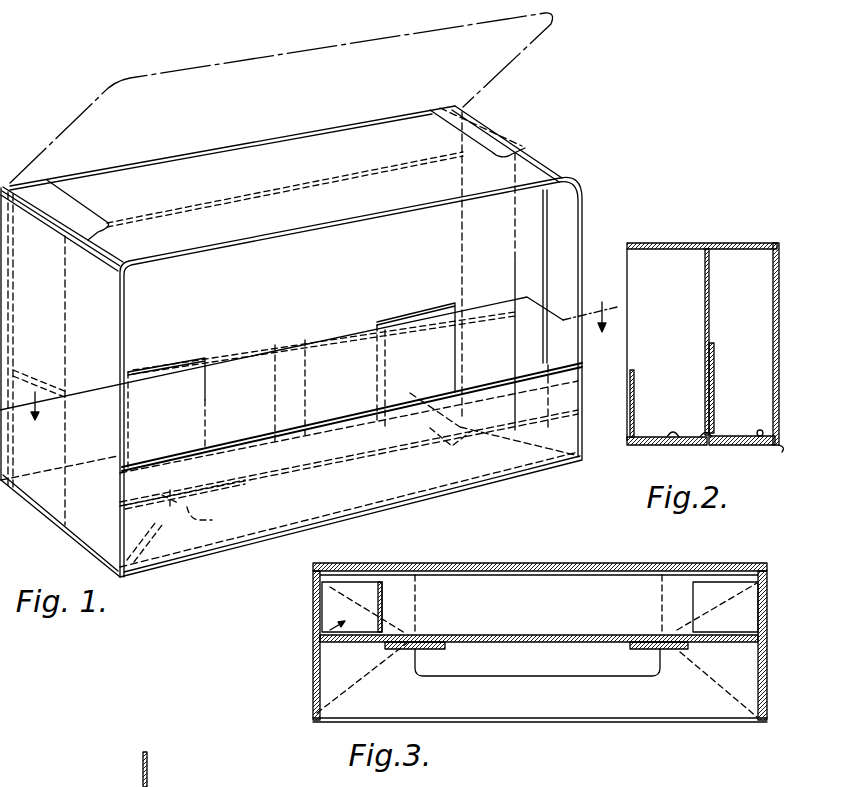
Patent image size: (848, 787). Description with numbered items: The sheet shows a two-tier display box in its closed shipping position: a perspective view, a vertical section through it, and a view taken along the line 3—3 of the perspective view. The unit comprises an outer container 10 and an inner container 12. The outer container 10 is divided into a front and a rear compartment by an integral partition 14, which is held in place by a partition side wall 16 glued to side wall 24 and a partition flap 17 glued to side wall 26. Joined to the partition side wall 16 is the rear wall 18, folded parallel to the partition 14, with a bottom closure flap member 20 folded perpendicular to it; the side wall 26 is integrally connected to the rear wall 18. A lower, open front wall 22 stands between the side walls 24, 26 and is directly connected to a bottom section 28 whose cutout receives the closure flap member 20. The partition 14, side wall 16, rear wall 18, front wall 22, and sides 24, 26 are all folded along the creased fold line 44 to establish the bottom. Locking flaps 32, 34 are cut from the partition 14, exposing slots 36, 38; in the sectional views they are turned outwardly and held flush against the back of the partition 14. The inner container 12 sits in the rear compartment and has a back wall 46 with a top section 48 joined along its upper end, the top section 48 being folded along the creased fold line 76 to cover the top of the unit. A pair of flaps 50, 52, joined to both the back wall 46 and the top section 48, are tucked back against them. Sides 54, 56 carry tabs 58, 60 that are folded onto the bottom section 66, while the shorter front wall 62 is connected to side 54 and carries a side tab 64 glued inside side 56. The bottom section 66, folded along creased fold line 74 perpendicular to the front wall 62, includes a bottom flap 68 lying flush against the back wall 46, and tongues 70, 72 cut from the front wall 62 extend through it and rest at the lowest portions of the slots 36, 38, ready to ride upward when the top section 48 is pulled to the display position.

In FIG. 2, the outer container 10 is at (648, 407).
In FIG. 3, the outer container 10 is at (485, 570).
In FIG. 2, the inner container 12 is at (738, 244).
In FIG. 3, the inner container 12 is at (313, 628).
In FIG. 1, the partition 14 is at (272, 188).
In FIG. 2, the partition 14 is at (710, 292).
In FIG. 3, the partition 14 is at (526, 652).
In FIG. 1, the partition side wall 16 is at (58, 228).
In FIG. 3, the partition side wall 16 is at (313, 615).
In FIG. 1, the partition flap 17 is at (545, 228).
In FIG. 3, the partition flap 17 is at (758, 667).
In FIG. 1, the rear wall 18 is at (330, 128).
In FIG. 2, the rear wall 18 is at (780, 312).
In FIG. 3, the rear wall 18 is at (558, 565).
In FIG. 1, the bottom closure flap member 20 is at (372, 508).
In FIG. 2, the bottom closure flap member 20 is at (670, 445).
In FIG. 3, the bottom closure flap member 20 is at (550, 678).
In FIG. 1, the open front wall 22 is at (302, 530).
In FIG. 2, the open front wall 22 is at (627, 390).
In FIG. 1, the side wall 24 is at (114, 306).
In FIG. 2, the side wall 24 is at (637, 340).
In FIG. 3, the side wall 24 is at (313, 683).
In FIG. 1, the side wall 26 is at (582, 270).
In FIG. 3, the side wall 26 is at (767, 683).
In FIG. 2, the bottom section 28 is at (632, 445).
In FIG. 1, the locking flap 32 is at (235, 366).
In FIG. 2, the locking flap 32 is at (713, 370).
In FIG. 3, the locking flap 32 is at (474, 635).
In FIG. 1, the locking flap 34 is at (358, 352).
In FIG. 3, the locking flap 34 is at (590, 636).
In FIG. 1, the slot 36 is at (170, 365).
In FIG. 2, the slot 36 is at (705, 341).
In FIG. 1, the slot 38 is at (412, 313).
In FIG. 1, the creased fold line 44 is at (357, 405).
In FIG. 2, the creased fold line 44 is at (779, 447).
In FIG. 2, the back wall 46 is at (774, 336).
In FIG. 3, the back wall 46 is at (492, 584).
In FIG. 1, the top section 48 is at (372, 218).
In FIG. 2, the top section 48 is at (677, 244).
In FIG. 3, the top section 48 is at (143, 760).
In FIG. 1, the flap 50 is at (496, 128).
In FIG. 3, the flap 50 is at (720, 566).
In FIG. 1, the flap 52 is at (80, 206).
In FIG. 3, the flap 52 is at (352, 568).
In FIG. 1, the side 54 is at (503, 303).
In FIG. 3, the side 54 is at (752, 617).
In FIG. 3, the side 56 is at (314, 594).
In FIG. 3, the tab 58 is at (698, 607).
In FIG. 3, the tab 60 is at (377, 596).
In FIG. 1, the front wall 62 is at (287, 345).
In FIG. 3, the front wall 62 is at (533, 640).
In FIG. 1, the side tab 64 is at (62, 385).
In FIG. 3, the side tab 64 is at (330, 617).
In FIG. 2, the bottom section 66 is at (732, 445).
In FIG. 3, the bottom section 66 is at (627, 578).
In FIG. 2, the bottom flap 68 is at (770, 400).
In FIG. 3, the bottom flap 68 is at (465, 590).
In FIG. 1, the tongue 70 is at (182, 515).
In FIG. 2, the tongue 70 is at (700, 430).
In FIG. 3, the tongue 70 is at (403, 656).
In FIG. 1, the tongue 72 is at (432, 448).
In FIG. 3, the tongue 72 is at (676, 655).
In FIG. 2, the creased fold line 74 is at (760, 446).
In FIG. 1, the creased fold line 76 is at (232, 146).
In FIG. 2, the creased fold line 76 is at (775, 246).
In FIG. 1, the section line 3— 3 is at (309, 351).